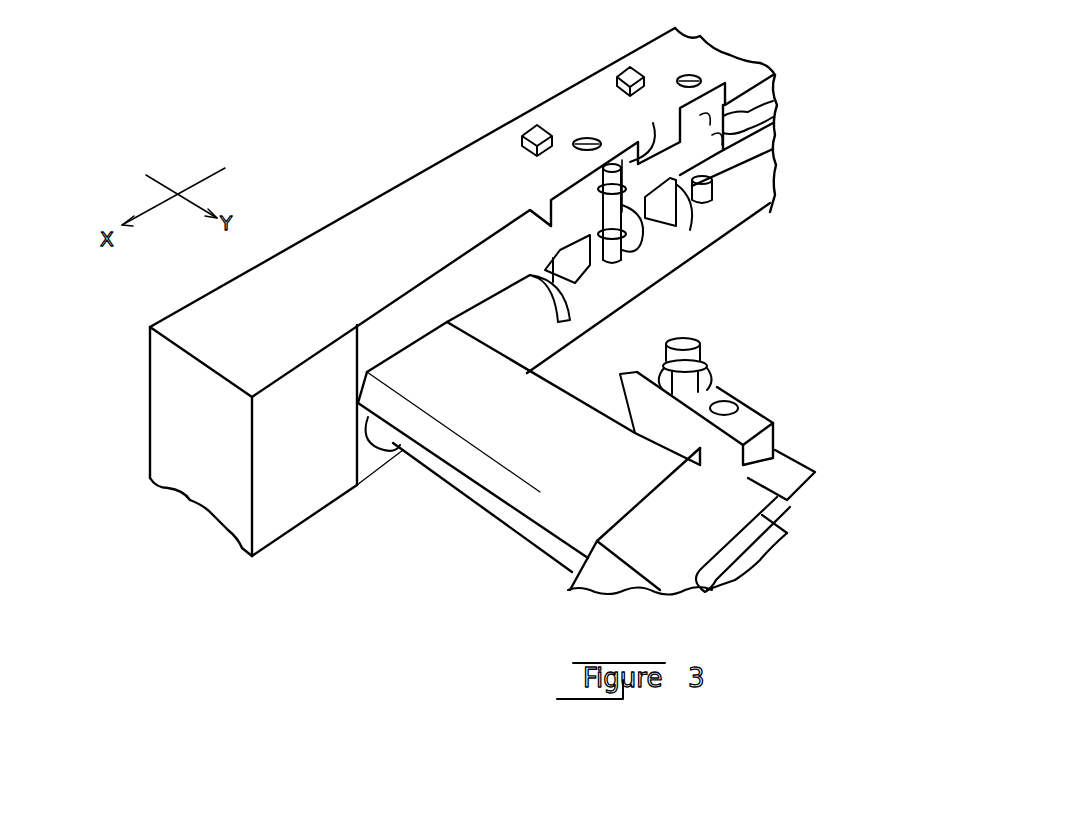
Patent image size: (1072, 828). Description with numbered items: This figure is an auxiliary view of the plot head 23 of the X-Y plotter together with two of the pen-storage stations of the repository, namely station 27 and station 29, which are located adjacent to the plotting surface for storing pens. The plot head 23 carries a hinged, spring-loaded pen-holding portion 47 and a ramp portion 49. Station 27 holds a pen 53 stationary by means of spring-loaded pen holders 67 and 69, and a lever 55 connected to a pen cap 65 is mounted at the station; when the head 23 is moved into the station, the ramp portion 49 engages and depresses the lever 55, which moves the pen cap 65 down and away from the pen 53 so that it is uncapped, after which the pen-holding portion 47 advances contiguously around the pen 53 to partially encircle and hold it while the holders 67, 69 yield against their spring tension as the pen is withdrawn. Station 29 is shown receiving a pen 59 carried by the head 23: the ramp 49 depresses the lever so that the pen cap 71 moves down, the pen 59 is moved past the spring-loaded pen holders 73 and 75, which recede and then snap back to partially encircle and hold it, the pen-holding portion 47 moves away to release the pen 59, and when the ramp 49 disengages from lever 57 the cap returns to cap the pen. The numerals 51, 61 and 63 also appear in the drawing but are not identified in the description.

The plot head 23 is at (746, 407).
The pen-storage station 27 is at (603, 160).
The pen-storage station 29 is at (702, 140).
The pen-holding portion 47 is at (714, 372).
The ramp portion 49 is at (617, 400).
The blocks 51 is at (617, 75).
The pen 53 is at (596, 207).
The lever 55 is at (577, 292).
The lever 57 is at (682, 228).
The pen 59 is at (692, 342).
The plate 61 is at (770, 522).
The arm 63 is at (652, 490).
The pen cap 65 is at (623, 268).
The pen holder 67 is at (650, 124).
The pen holder 69 is at (636, 241).
The pen cap 71 is at (712, 190).
The pen holder 73 is at (770, 100).
The pen holder 75 is at (766, 126).